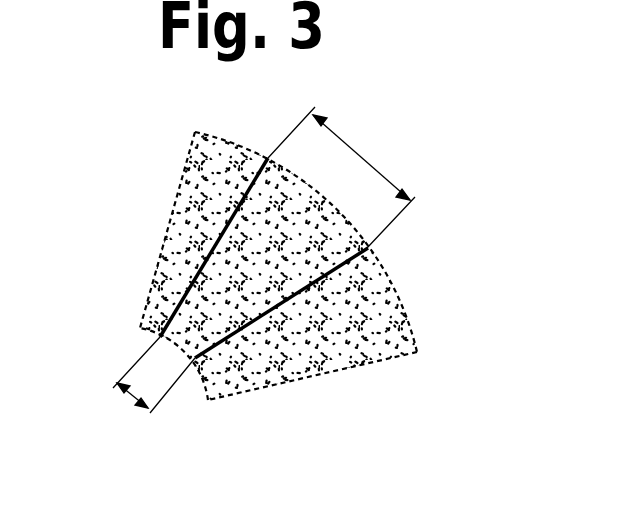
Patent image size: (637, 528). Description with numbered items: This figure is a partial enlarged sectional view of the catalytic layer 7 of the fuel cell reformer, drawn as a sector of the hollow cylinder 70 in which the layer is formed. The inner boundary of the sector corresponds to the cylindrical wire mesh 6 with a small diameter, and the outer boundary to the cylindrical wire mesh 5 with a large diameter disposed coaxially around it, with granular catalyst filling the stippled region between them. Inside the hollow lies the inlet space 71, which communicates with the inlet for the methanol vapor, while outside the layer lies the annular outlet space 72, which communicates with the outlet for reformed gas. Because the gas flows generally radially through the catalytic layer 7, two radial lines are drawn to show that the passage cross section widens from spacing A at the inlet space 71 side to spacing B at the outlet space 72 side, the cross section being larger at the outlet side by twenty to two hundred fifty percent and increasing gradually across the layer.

The cylindrical wire mesh with a large diameter 5 is at (223, 142).
The hollow cylinder 70 is at (180, 227).
The cylindrical wire mesh with a small diameter 6 is at (152, 333).
The inlet space 71 is at (132, 353).
The annular outlet space 72 is at (408, 258).
The catalytic layer 7 is at (412, 313).